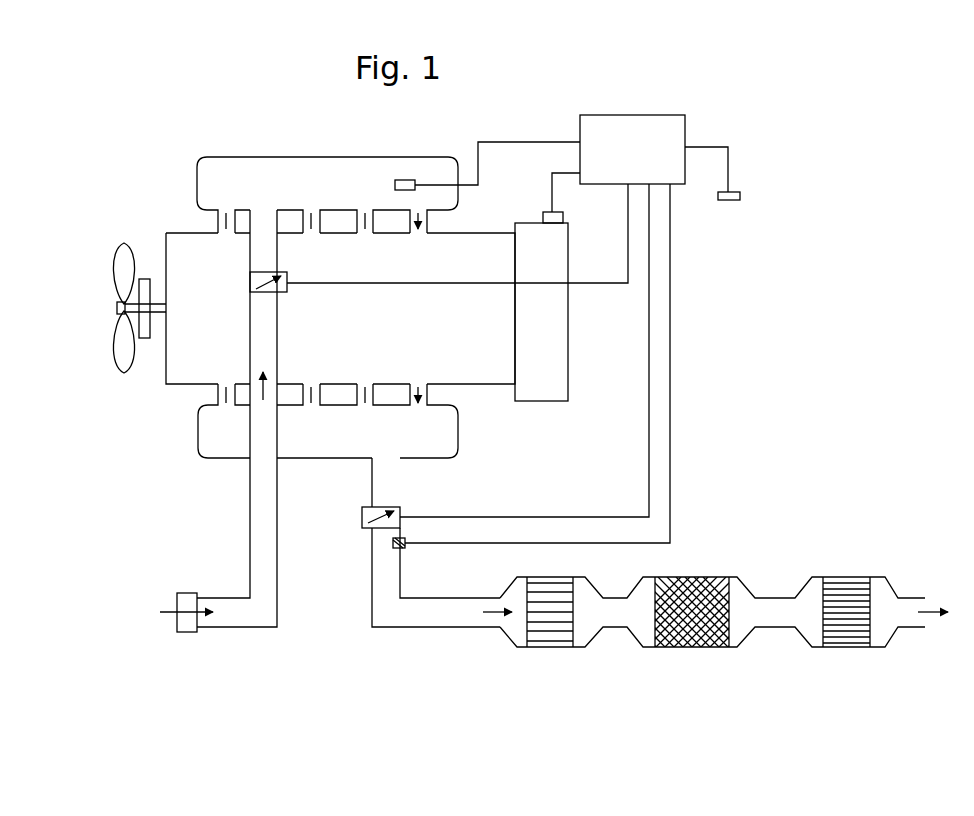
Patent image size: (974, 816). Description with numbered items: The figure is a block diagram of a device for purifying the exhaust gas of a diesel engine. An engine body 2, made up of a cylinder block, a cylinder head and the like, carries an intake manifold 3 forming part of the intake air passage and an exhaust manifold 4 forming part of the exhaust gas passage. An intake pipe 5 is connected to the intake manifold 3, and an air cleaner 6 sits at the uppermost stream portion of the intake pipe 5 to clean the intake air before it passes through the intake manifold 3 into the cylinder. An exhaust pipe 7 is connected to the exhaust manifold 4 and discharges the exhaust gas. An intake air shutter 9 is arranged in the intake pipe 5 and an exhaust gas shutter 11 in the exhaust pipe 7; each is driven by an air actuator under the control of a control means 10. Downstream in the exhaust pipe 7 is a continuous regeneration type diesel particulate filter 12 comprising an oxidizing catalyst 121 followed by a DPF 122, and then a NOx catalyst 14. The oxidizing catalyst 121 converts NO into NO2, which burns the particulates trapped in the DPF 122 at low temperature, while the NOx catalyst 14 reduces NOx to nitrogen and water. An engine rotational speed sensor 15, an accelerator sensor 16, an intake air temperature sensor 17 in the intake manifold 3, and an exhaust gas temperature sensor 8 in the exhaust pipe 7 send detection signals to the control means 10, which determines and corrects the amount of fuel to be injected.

The engine body 2 is at (166, 372).
The intake manifold 3 is at (197, 176).
The exhaust manifold 4 is at (205, 458).
The intake pipe 5 is at (250, 356).
The air cleaner 6 is at (190, 632).
The exhaust pipe 7 is at (423, 627).
The exhaust gas temperature sensor 8 is at (405, 548).
The intake air shutter 9 is at (288, 288).
The control means 10 is at (677, 185).
The exhaust gas shutter 11 is at (400, 511).
The continuous regeneration type diesel particulate filter 12 is at (654, 675).
The oxidizing catalyst 121 is at (543, 648).
The DPF 122 is at (692, 644).
The NOx catalyst 14 is at (855, 648).
The engine rotational speed sensor 15 is at (543, 218).
The accelerator sensor 16 is at (727, 200).
The intake air temperature sensor 17 is at (395, 184).